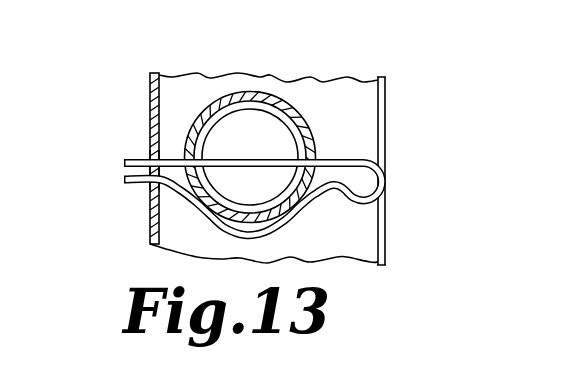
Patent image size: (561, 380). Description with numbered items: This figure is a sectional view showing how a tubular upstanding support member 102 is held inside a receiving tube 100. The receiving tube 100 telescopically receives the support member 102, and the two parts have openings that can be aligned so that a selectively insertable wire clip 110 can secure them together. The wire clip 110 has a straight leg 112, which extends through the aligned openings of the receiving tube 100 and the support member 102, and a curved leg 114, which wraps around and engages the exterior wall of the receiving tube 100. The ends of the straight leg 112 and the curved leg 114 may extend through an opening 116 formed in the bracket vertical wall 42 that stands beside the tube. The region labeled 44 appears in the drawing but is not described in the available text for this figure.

The bracket vertical wall 42 is at (150, 92).
The housing body 44 is at (211, 86).
The receiving tube 100 is at (310, 128).
The upstanding support member 102 is at (288, 113).
The wire clip 110 is at (286, 198).
The straight leg 112 is at (263, 135).
The curved leg 114 is at (289, 222).
The opening 116 is at (150, 144).